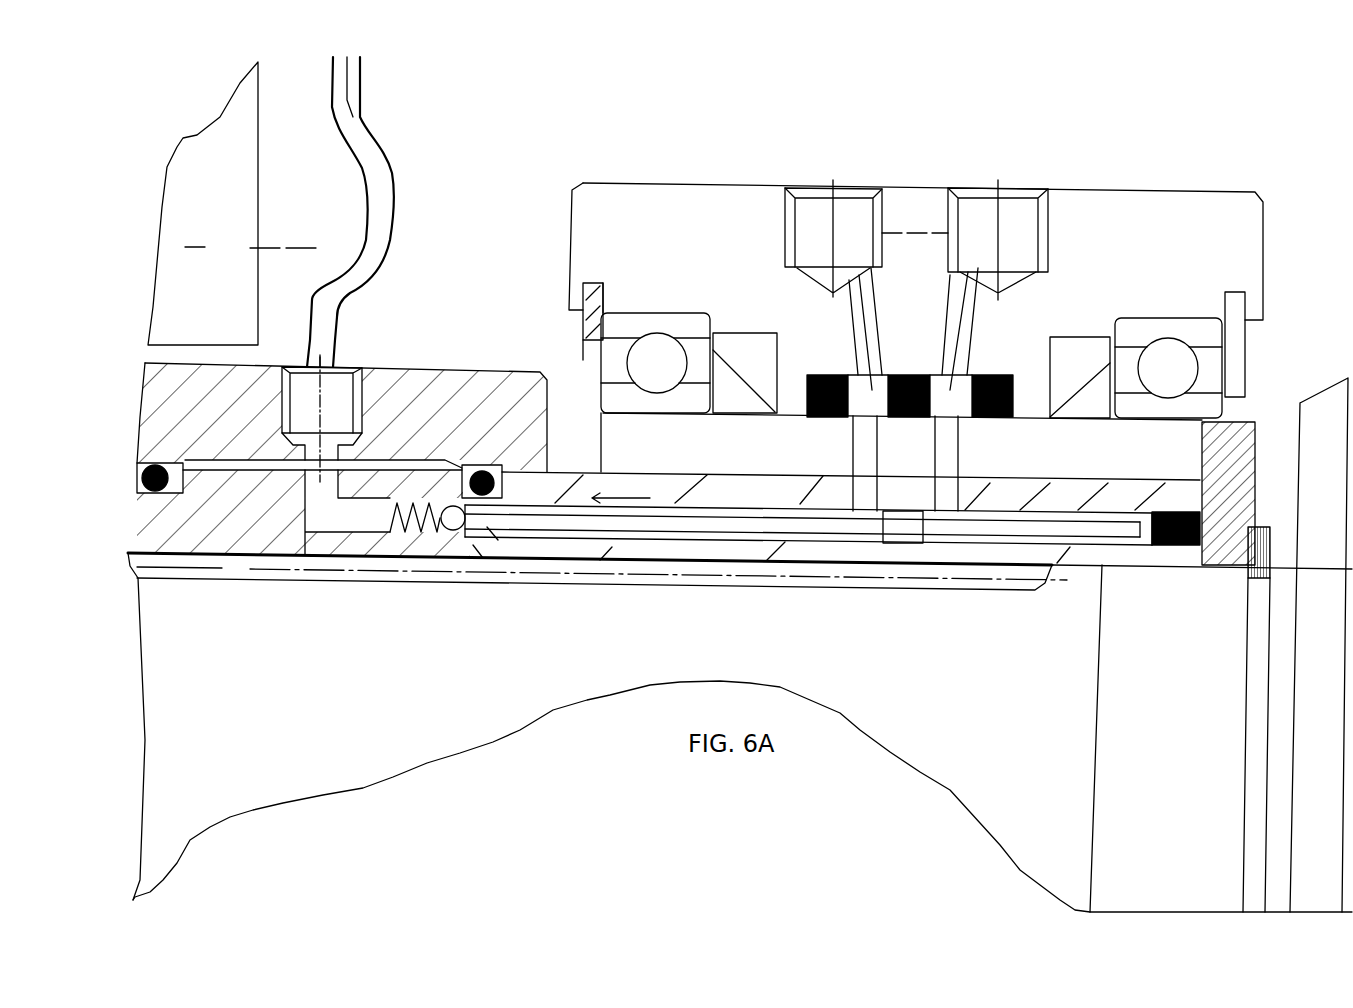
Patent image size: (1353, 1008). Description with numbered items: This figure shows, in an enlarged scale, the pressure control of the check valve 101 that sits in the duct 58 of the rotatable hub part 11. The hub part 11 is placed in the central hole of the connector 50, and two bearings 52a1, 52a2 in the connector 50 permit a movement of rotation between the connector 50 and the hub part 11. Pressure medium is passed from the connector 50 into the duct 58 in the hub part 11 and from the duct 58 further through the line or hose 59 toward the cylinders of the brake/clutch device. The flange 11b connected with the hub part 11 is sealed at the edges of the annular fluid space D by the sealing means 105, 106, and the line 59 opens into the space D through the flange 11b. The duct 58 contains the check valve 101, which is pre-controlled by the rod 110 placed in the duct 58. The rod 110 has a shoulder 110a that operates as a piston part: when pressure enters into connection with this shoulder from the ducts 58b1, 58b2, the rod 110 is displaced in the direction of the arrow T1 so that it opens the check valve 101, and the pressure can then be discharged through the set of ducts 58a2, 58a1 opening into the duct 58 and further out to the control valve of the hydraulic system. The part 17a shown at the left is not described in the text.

The frame plate 17a is at (225, 215).
The hose 59 is at (396, 258).
The flange 11b is at (433, 368).
The hub part 11 is at (251, 548).
The sealing means 106 is at (163, 493).
The fluid space D is at (265, 475).
The sealing means 105 is at (487, 467).
The check valve 101 is at (463, 548).
The rod 110 is at (607, 523).
The shoulder 110a is at (903, 535).
The duct 58 is at (732, 535).
The arrow T1 is at (617, 493).
The duct 58a1 is at (862, 441).
The duct 58b1 is at (966, 449).
The duct 58a2 is at (852, 304).
The duct 58b2 is at (966, 343).
The bearing 52a1 is at (658, 343).
The bearing 52a2 is at (1175, 350).
The connector 50 is at (1140, 192).